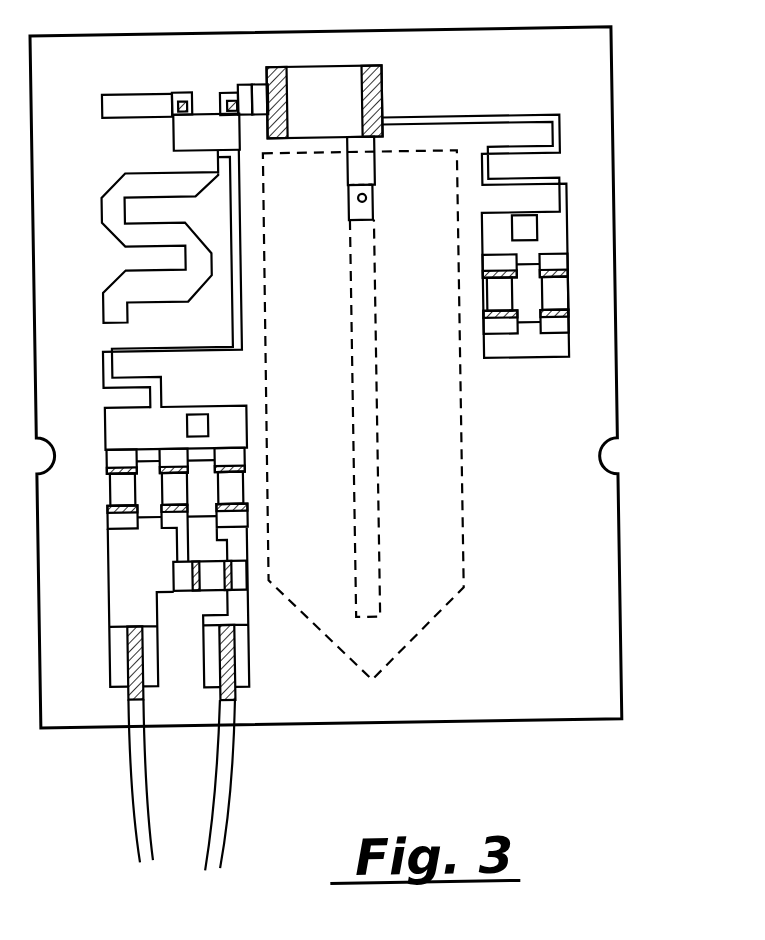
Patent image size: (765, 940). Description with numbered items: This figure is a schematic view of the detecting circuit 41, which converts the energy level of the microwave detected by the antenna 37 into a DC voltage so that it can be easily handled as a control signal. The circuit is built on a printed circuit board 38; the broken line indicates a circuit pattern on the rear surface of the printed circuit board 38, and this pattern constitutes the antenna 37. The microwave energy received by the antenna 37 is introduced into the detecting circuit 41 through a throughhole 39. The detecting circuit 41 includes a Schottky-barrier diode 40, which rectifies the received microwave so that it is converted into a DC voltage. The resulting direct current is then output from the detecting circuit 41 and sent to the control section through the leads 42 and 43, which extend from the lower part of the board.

The antenna 37 is at (368, 613).
The printed circuit board 38 is at (589, 636).
The throughhole 39 is at (364, 203).
The Schottky-barrier diode 40 is at (212, 125).
The detecting circuit 41 is at (541, 216).
The lead 42 is at (124, 847).
The lead 43 is at (212, 855).